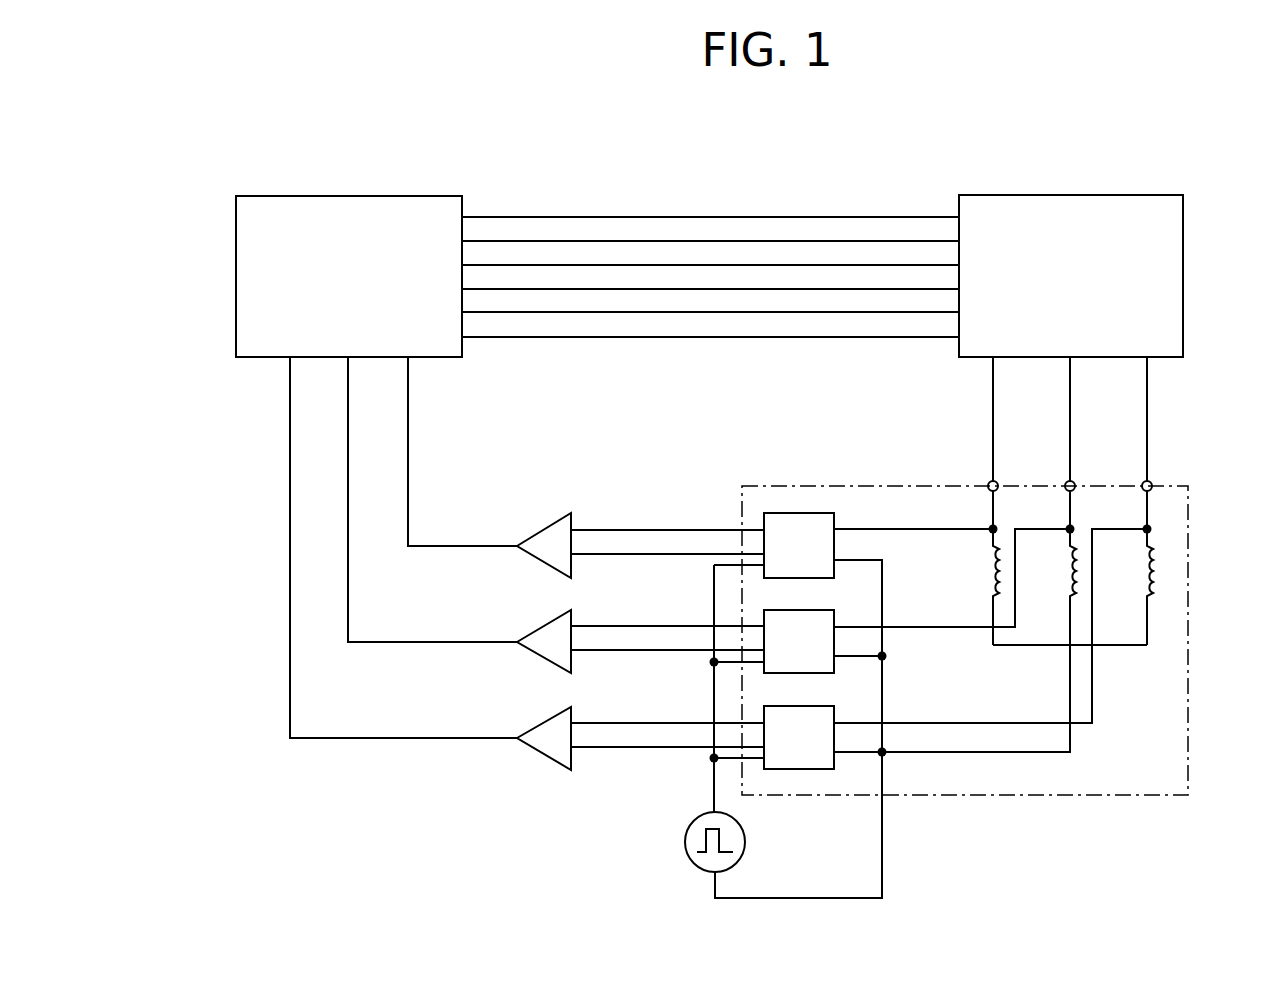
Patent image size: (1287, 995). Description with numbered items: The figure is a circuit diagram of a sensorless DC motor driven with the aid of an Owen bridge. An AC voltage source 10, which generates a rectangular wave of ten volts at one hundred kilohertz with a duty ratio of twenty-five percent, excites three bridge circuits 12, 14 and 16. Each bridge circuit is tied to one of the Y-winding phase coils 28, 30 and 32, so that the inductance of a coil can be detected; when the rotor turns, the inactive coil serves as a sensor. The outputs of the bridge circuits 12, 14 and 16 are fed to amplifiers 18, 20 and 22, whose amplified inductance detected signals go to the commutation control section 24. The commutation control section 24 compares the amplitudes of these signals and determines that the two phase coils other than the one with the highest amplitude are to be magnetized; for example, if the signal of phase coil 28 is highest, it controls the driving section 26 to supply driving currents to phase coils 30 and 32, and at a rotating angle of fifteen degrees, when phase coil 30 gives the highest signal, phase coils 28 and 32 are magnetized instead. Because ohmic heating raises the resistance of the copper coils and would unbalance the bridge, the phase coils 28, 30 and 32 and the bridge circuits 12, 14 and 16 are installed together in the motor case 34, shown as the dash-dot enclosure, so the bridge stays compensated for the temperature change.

The AC voltage source 10 is at (683, 841).
The bridge circuit 12 is at (799, 545).
The bridge circuit 14 is at (799, 641).
The bridge circuit 16 is at (799, 737).
The amplifier 18 is at (545, 530).
The amplifier 20 is at (545, 626).
The amplifier 22 is at (545, 722).
The commutation control section 24 is at (349, 196).
The driving section 26 is at (1070, 195).
The phase coil 28 is at (988, 563).
The phase coil 30 is at (1065, 560).
The phase coil 32 is at (1142, 560).
The motor case 34 is at (1188, 670).